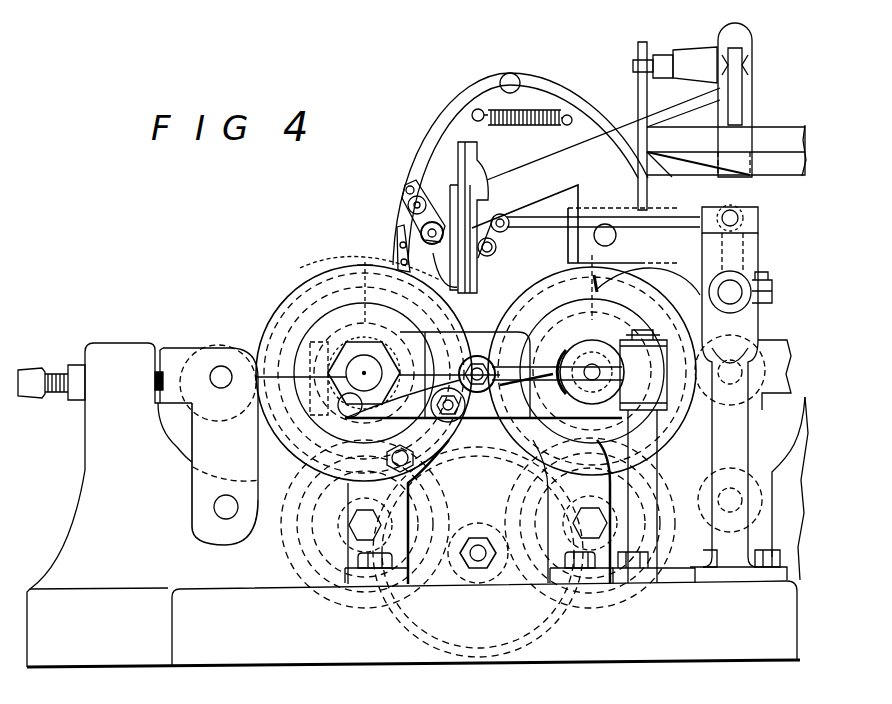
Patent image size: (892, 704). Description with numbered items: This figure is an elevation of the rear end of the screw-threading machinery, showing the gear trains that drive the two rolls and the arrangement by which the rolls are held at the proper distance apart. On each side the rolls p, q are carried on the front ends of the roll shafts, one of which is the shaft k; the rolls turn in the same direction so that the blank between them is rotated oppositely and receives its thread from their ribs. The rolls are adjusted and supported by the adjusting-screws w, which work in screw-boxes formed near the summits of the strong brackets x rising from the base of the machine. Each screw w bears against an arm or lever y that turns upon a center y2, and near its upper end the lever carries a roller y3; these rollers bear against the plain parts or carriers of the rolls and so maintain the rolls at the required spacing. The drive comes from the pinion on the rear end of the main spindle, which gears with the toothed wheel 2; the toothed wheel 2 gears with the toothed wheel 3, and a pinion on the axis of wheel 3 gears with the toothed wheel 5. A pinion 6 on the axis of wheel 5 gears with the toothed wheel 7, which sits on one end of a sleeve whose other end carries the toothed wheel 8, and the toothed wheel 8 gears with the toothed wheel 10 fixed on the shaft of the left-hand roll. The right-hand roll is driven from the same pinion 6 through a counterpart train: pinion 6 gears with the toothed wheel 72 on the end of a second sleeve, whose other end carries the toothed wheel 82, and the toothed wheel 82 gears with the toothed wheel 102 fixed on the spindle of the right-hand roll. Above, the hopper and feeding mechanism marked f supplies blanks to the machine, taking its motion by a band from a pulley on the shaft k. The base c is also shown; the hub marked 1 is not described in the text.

The shaft/pivot bolt 1 is at (377, 376).
The toothed wheel 2 is at (480, 377).
The toothed wheel 3 is at (502, 497).
The toothed wheel 5 is at (478, 547).
The pinion 6 is at (479, 536).
The toothed wheel 7 is at (365, 536).
The toothed wheel 72 is at (632, 585).
The toothed wheel 8 is at (450, 528).
The toothed wheel 82 is at (683, 473).
The toothed wheel 10 is at (372, 295).
The toothed wheel 102 is at (640, 308).
The base c is at (413, 624).
The hopper and feeding mechanism f is at (599, 158).
The shaft k is at (612, 332).
The roll p is at (422, 350).
The roll q is at (290, 320).
The adjusting-screw w is at (62, 352).
The bracket x is at (419, 464).
The arm or lever y is at (760, 425).
The center y2 is at (222, 507).
The roller y3 is at (214, 352).